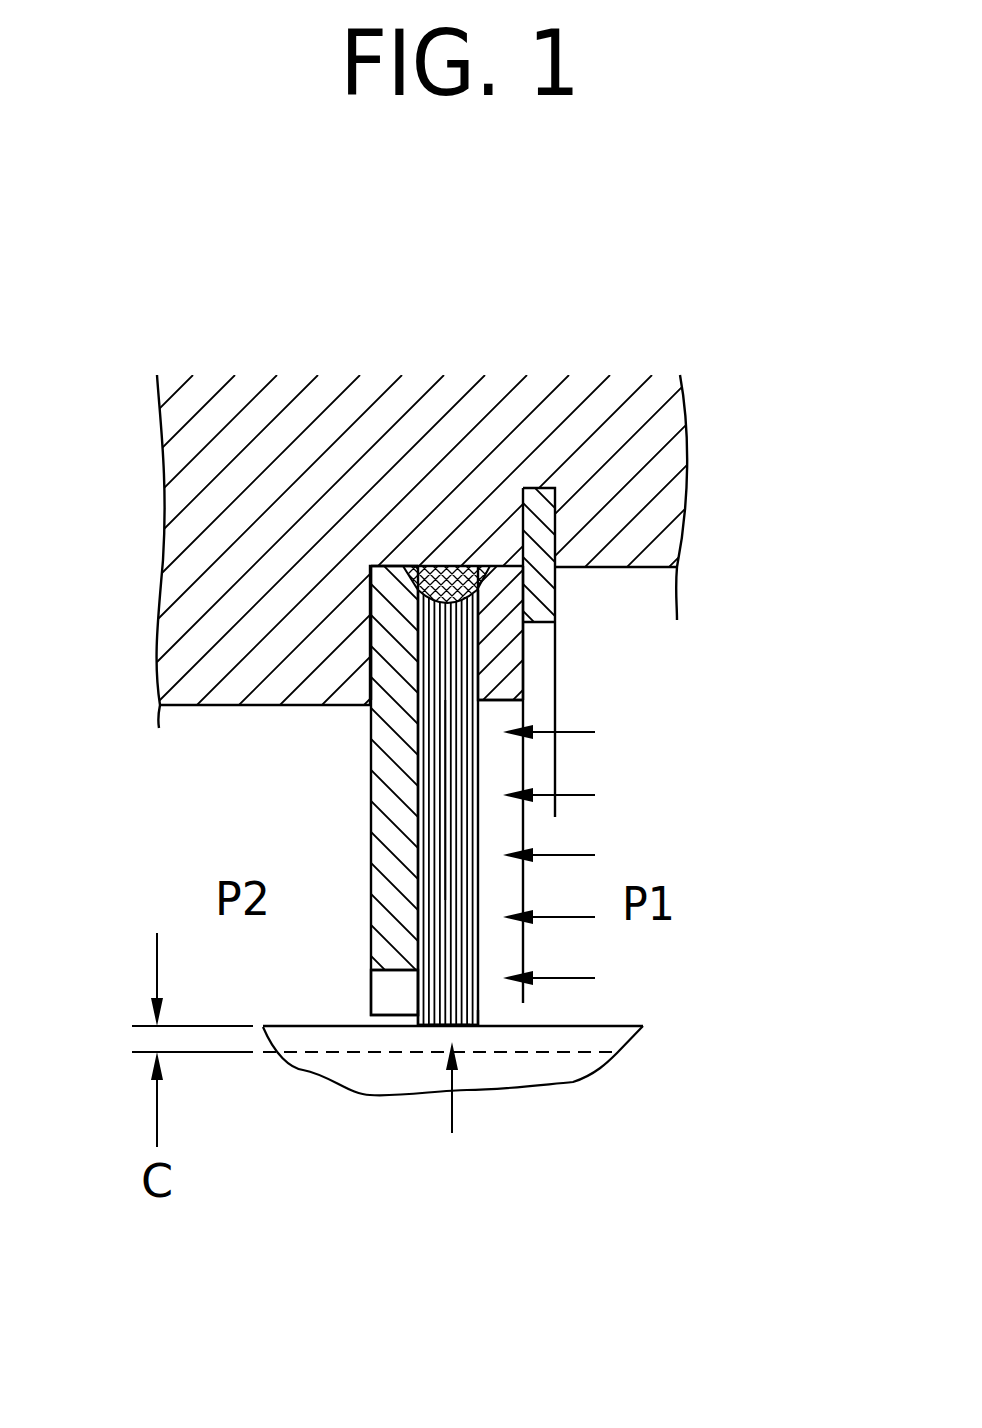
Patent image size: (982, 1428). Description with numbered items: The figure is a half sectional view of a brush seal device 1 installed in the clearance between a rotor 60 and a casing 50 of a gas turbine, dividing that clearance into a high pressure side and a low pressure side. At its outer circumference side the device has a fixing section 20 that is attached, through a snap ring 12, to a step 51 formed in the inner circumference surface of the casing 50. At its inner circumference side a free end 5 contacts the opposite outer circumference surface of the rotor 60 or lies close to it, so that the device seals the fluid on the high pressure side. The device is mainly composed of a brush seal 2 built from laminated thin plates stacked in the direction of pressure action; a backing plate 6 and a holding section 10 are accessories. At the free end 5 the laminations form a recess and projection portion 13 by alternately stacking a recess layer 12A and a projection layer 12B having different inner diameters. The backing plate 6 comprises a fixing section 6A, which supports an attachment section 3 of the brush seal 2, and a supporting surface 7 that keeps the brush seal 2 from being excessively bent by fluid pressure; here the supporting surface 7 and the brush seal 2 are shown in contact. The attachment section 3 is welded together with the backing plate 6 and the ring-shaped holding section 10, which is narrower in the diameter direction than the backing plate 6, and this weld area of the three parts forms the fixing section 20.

The brush seal device 1 is at (634, 336).
The brush seal 2 is at (437, 833).
The attachment section 3 is at (447, 590).
The free end 5 is at (472, 1028).
The backing plate 6 is at (390, 715).
The fixing section 6A is at (397, 627).
The supporting surface 7 is at (423, 767).
The holding section 10 is at (513, 595).
The snap ring 12 is at (540, 487).
The recess layer 12A is at (467, 1028).
The projection layer 12B is at (418, 1028).
The recess and projection portion 13 is at (403, 1012).
The fixing section 20 is at (513, 662).
The casing 50 is at (663, 426).
The step 51 is at (387, 575).
The rotor 60 is at (577, 1062).